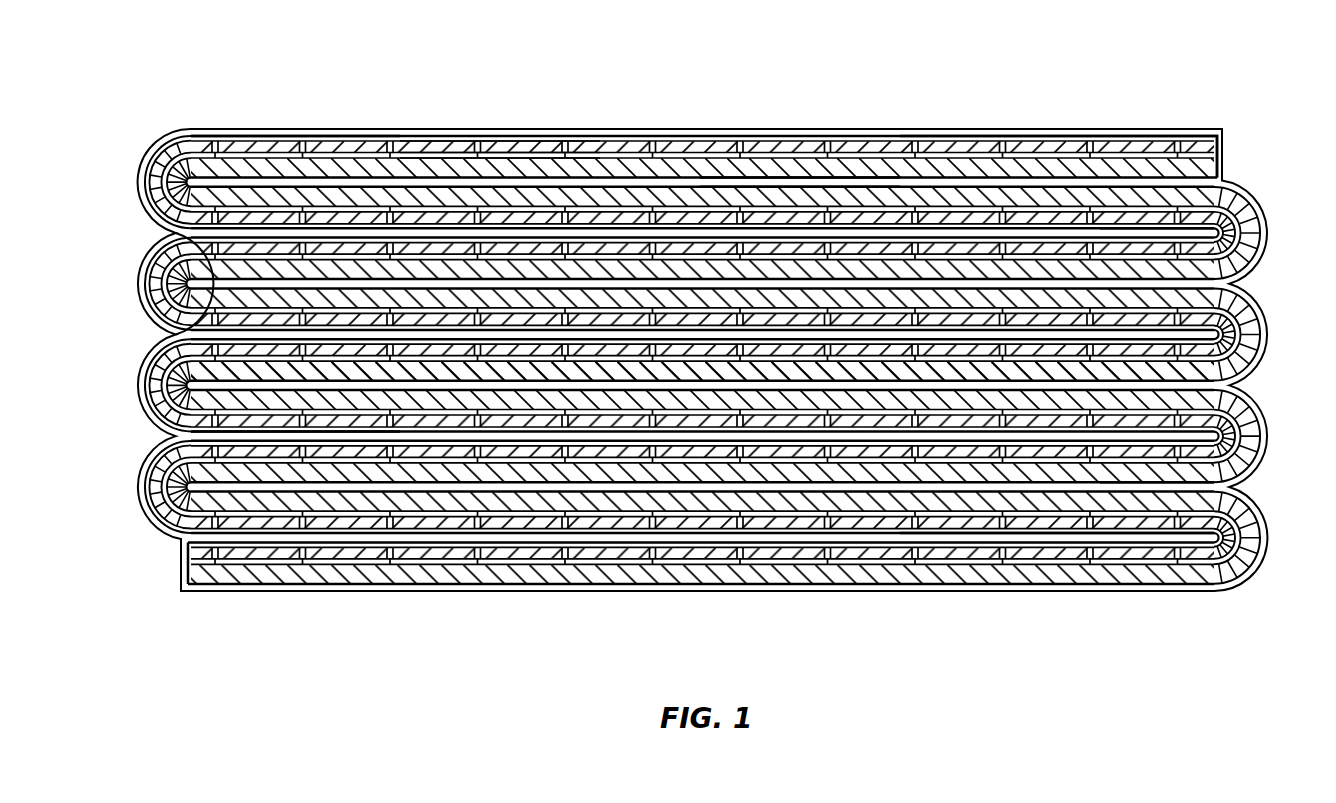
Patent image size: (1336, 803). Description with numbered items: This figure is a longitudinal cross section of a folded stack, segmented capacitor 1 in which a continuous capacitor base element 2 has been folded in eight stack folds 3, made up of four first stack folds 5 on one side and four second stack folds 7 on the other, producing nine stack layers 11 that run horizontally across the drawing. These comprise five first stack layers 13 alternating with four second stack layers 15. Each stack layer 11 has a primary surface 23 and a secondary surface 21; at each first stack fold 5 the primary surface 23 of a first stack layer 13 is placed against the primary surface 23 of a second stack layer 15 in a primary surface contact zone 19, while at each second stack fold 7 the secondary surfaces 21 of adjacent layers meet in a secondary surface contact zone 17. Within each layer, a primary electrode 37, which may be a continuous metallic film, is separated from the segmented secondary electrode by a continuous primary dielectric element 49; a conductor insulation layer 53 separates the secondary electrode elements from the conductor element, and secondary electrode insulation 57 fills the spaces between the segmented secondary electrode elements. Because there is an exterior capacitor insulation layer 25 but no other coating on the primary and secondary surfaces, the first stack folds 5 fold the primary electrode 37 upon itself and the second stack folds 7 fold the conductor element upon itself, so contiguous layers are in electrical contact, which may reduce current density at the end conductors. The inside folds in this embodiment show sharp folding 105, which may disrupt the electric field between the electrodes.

The folded stack, segmented capacitor 1 is at (596, 132).
The continuous capacitor base element 2 is at (155, 145).
The stack folds 3 is at (139, 178).
The first stack folds 5 is at (137, 189).
The second stack folds 7 is at (1257, 200).
The stack layers 11 is at (338, 143).
The first stack layers 13 is at (693, 143).
The second stack layers 15 is at (250, 425).
The secondary surface contact zone 17 is at (1048, 232).
The primary surface contact zone 19 is at (405, 183).
The secondary surface 21 is at (893, 132).
The primary surface 23 is at (960, 180).
The exterior capacitor insulation layer 25 is at (137, 256).
The primary electrode 37 is at (783, 185).
The continuous primary dielectric element 49 is at (258, 170).
The conductor insulation layer 53 is at (512, 150).
The secondary electrode insulation 57 is at (440, 157).
The sharp folding 105 is at (183, 150).